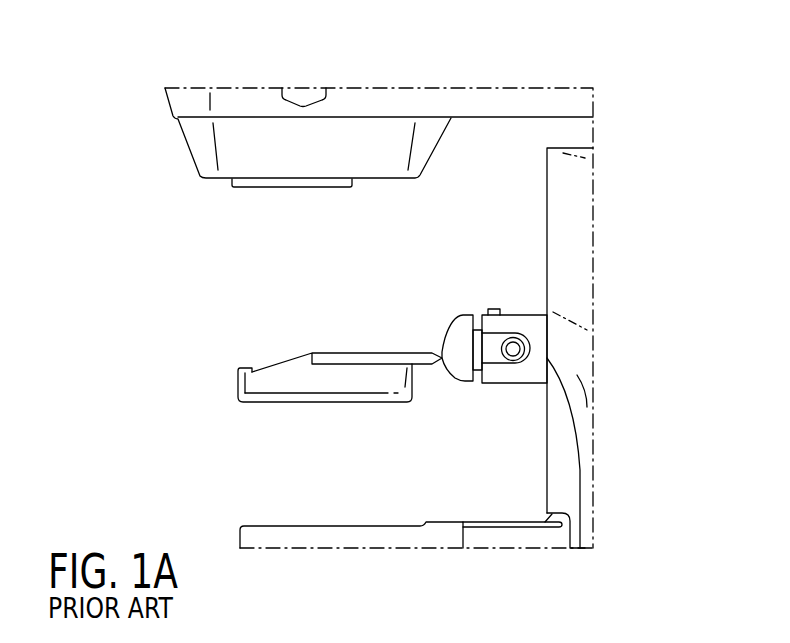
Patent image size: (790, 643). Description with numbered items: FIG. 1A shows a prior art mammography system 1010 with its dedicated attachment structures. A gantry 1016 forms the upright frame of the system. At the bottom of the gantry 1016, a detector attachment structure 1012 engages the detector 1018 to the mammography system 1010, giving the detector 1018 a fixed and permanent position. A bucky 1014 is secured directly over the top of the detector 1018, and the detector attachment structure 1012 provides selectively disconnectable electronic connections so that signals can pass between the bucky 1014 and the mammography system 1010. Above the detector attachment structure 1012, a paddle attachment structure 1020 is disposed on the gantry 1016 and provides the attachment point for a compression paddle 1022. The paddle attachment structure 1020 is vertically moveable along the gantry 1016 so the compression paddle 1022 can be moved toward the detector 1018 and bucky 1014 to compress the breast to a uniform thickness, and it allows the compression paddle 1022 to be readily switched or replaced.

The mammography system 1010 is at (465, 62).
The detector attachment structure 1012 is at (552, 527).
The bucky 1014 is at (232, 535).
The gantry 1016 is at (548, 240).
The detector 1018 is at (482, 537).
The paddle attachment structure 1020 is at (515, 312).
The compression paddle 1022 is at (238, 380).